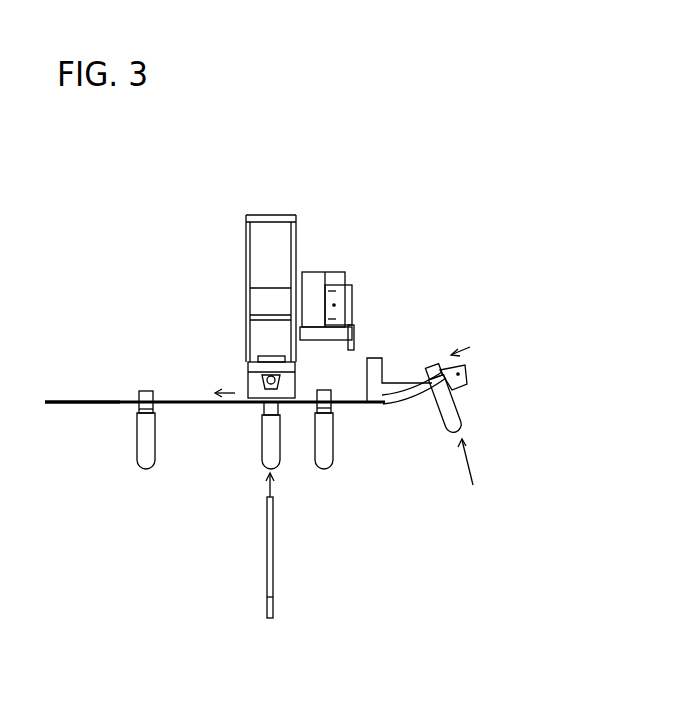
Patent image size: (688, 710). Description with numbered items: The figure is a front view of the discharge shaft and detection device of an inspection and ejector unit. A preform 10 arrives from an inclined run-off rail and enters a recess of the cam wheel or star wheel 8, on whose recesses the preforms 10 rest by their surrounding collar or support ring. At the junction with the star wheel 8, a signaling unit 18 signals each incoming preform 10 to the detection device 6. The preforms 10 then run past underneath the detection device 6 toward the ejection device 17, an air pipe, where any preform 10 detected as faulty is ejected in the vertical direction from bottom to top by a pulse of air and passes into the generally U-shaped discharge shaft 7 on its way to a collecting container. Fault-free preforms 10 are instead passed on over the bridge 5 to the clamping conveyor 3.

The clamping conveyor 3 is at (76, 401).
The bridge 5 is at (187, 404).
The detection device 6 is at (347, 278).
The discharge shaft 7 is at (265, 257).
The cam wheel or star wheel 8 is at (345, 404).
The preform 10 is at (461, 444).
The ejection device 17 is at (273, 563).
The signaling unit 18 is at (372, 363).